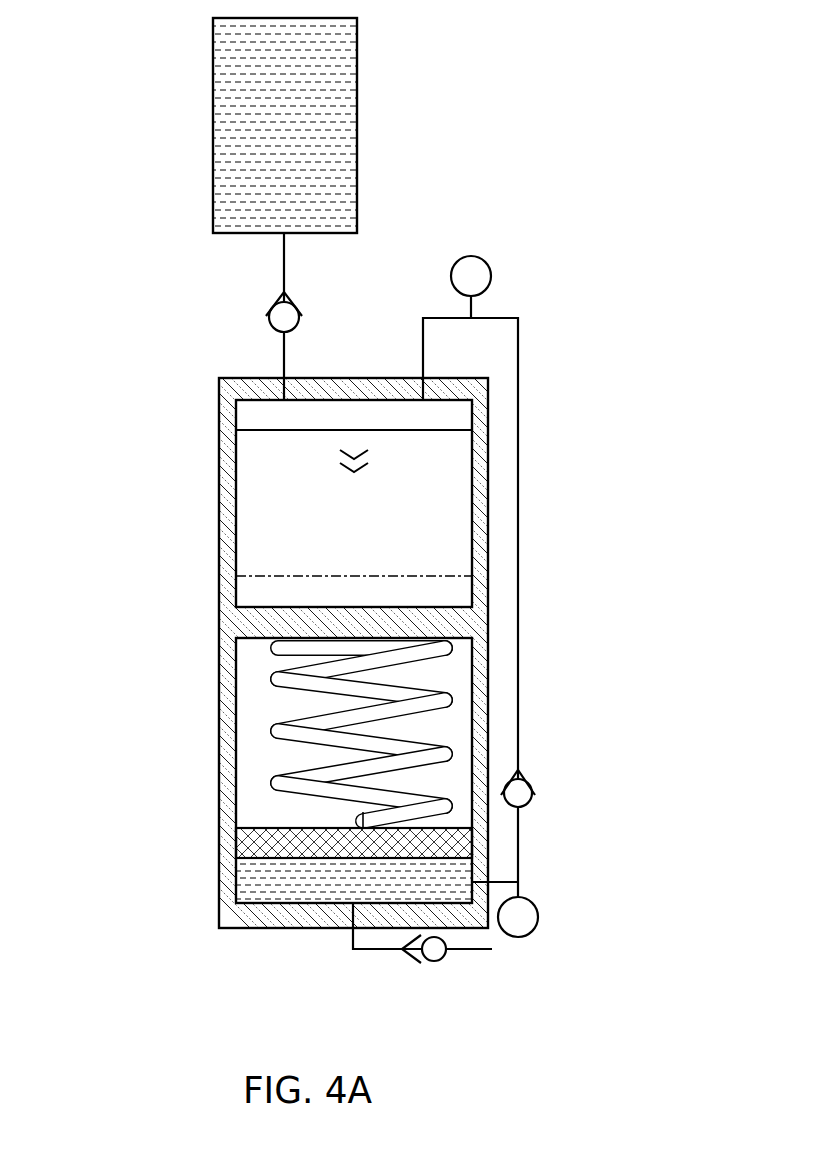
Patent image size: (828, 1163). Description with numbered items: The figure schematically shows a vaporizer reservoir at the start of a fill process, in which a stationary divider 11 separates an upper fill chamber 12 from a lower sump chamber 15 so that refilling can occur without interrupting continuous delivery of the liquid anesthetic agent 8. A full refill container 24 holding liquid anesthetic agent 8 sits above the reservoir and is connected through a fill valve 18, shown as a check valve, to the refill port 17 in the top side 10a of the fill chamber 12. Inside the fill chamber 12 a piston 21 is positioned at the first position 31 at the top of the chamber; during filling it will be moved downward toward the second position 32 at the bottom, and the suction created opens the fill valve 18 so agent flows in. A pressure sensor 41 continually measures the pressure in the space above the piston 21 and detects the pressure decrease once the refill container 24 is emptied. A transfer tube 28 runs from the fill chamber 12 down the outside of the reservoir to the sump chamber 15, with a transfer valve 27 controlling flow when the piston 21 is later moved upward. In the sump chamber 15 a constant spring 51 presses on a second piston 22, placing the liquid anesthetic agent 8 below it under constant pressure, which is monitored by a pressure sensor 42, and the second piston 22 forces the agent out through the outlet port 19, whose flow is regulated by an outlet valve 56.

The liquid anesthetic agent 8 is at (357, 47).
The refill container 24 is at (357, 125).
The pressure sensor 41 is at (469, 254).
The fill valve 18 is at (290, 313).
The refill port 17 is at (320, 332).
The top side 10a is at (232, 377).
The first position 31 is at (215, 414).
The piston 21 is at (428, 424).
The fill chamber 12 is at (222, 535).
The transfer tube 28 is at (520, 540).
The second position 32 is at (215, 594).
The stationary divider 11 is at (240, 628).
The constant spring 51 is at (275, 679).
The sump chamber 15 is at (230, 767).
The transfer valve 27 is at (528, 778).
The second piston 22 is at (240, 840).
The pressure sensor 42 is at (538, 918).
The outlet valve 56 is at (429, 961).
The outlet port 19 is at (343, 955).